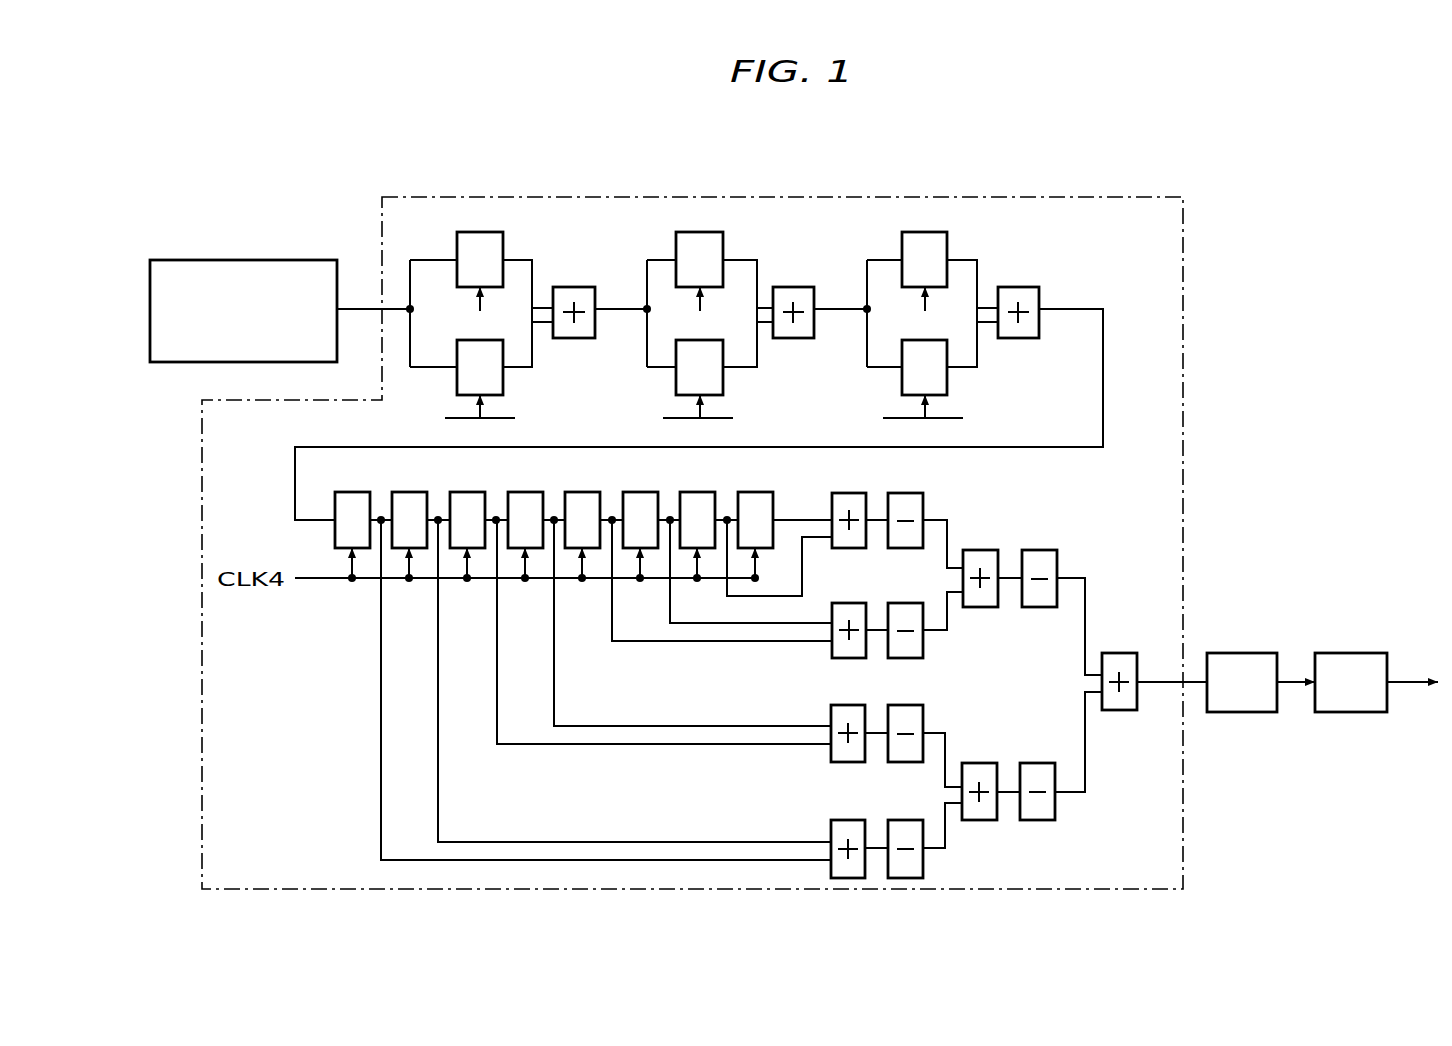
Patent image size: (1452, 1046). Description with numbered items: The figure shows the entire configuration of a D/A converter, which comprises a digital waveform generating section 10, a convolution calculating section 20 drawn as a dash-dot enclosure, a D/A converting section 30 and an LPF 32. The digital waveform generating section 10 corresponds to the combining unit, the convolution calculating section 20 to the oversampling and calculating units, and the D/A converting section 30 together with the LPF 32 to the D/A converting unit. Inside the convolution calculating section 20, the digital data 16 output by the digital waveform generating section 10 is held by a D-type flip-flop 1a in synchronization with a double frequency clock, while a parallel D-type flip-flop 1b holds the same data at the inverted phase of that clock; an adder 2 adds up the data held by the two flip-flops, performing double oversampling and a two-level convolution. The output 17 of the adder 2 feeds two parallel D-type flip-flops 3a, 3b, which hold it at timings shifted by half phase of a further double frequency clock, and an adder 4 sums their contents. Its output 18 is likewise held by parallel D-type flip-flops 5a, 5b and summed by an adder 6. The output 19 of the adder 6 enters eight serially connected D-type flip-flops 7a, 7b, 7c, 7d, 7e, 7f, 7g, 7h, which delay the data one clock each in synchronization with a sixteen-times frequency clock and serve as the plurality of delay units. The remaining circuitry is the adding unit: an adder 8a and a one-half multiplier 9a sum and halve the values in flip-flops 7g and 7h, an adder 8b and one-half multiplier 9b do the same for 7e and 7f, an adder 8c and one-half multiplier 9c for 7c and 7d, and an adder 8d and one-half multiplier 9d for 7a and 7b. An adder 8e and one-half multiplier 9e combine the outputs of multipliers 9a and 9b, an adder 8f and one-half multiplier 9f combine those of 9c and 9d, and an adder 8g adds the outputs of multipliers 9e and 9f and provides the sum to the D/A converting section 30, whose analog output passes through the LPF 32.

The digital waveform generating section 10 is at (284, 258).
The digital signal line 16 is at (344, 322).
The digital signal line 17 is at (617, 322).
The digital signal line 18 is at (829, 322).
The digital signal line 19 is at (1074, 322).
The convolution calculating section 20 is at (1183, 423).
The D-type flip-flop 1a is at (493, 232).
The D-type flip-flop 1b is at (503, 380).
The adder 2 is at (575, 287).
The D-type flip-flop 3a is at (713, 232).
The D-type flip-flop 3b is at (723, 380).
The adder 4 is at (788, 287).
The D-type flip-flop 5a is at (937, 232).
The D-type flip-flop 5b is at (947, 380).
The adder 6 is at (1014, 287).
The D-type flip-flop 7a is at (352, 492).
The D-type flip-flop 7b is at (409, 492).
The D-type flip-flop 7c is at (467, 492).
The D-type flip-flop 7d is at (525, 492).
The D-type flip-flop 7e is at (582, 492).
The D-type flip-flop 7f is at (640, 492).
The D-type flip-flop 7g is at (697, 492).
The D-type flip-flop 7h is at (755, 492).
The adder 8a is at (845, 493).
The adder 8b is at (845, 603).
The adder 8c is at (845, 705).
The adder 8d is at (845, 820).
The adder 8e is at (975, 550).
The adder 8f is at (975, 763).
The adder 8g is at (1123, 653).
The ½ multiplier 9a is at (903, 493).
The ½ multiplier 9b is at (903, 603).
The ½ multiplier 9c is at (903, 705).
The ½ multiplier 9d is at (903, 820).
The ½ multiplier 9e is at (1035, 550).
The ½ multiplier 9f is at (1035, 763).
The D/A converting section 30 is at (1240, 653).
The LPF 32 is at (1350, 653).